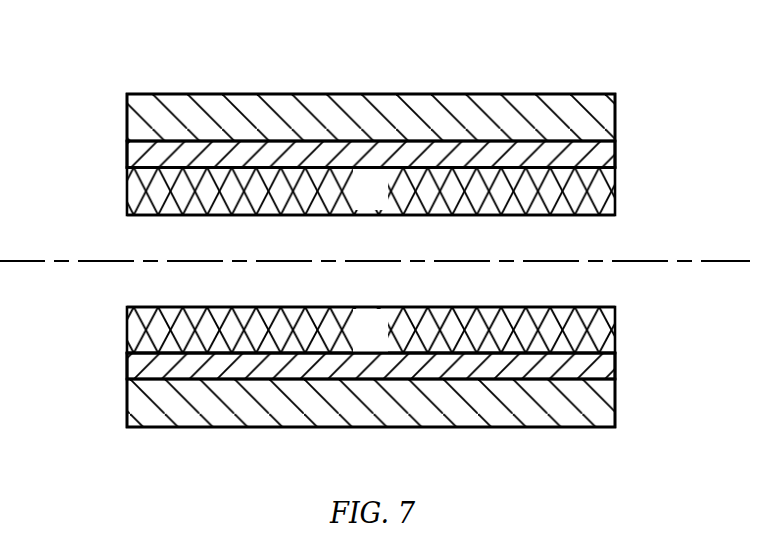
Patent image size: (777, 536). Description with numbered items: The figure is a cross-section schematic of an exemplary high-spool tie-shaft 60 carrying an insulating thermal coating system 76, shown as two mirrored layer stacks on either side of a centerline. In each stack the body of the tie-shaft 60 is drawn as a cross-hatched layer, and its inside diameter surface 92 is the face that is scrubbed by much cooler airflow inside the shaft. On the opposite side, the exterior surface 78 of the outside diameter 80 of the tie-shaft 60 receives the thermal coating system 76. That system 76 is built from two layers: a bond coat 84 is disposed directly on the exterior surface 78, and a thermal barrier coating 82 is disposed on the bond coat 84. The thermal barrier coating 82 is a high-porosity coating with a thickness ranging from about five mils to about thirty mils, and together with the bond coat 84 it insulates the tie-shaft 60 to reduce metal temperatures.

The tie-shaft 60 is at (384, 203).
The thermal coating system 76 is at (641, 94).
The exterior surface 78 is at (114, 163).
The outside diameter 80 is at (615, 168).
The thermal barrier coating 82 is at (148, 100).
The bond coat 84 is at (130, 143).
The inside diameter surface 92 is at (590, 215).